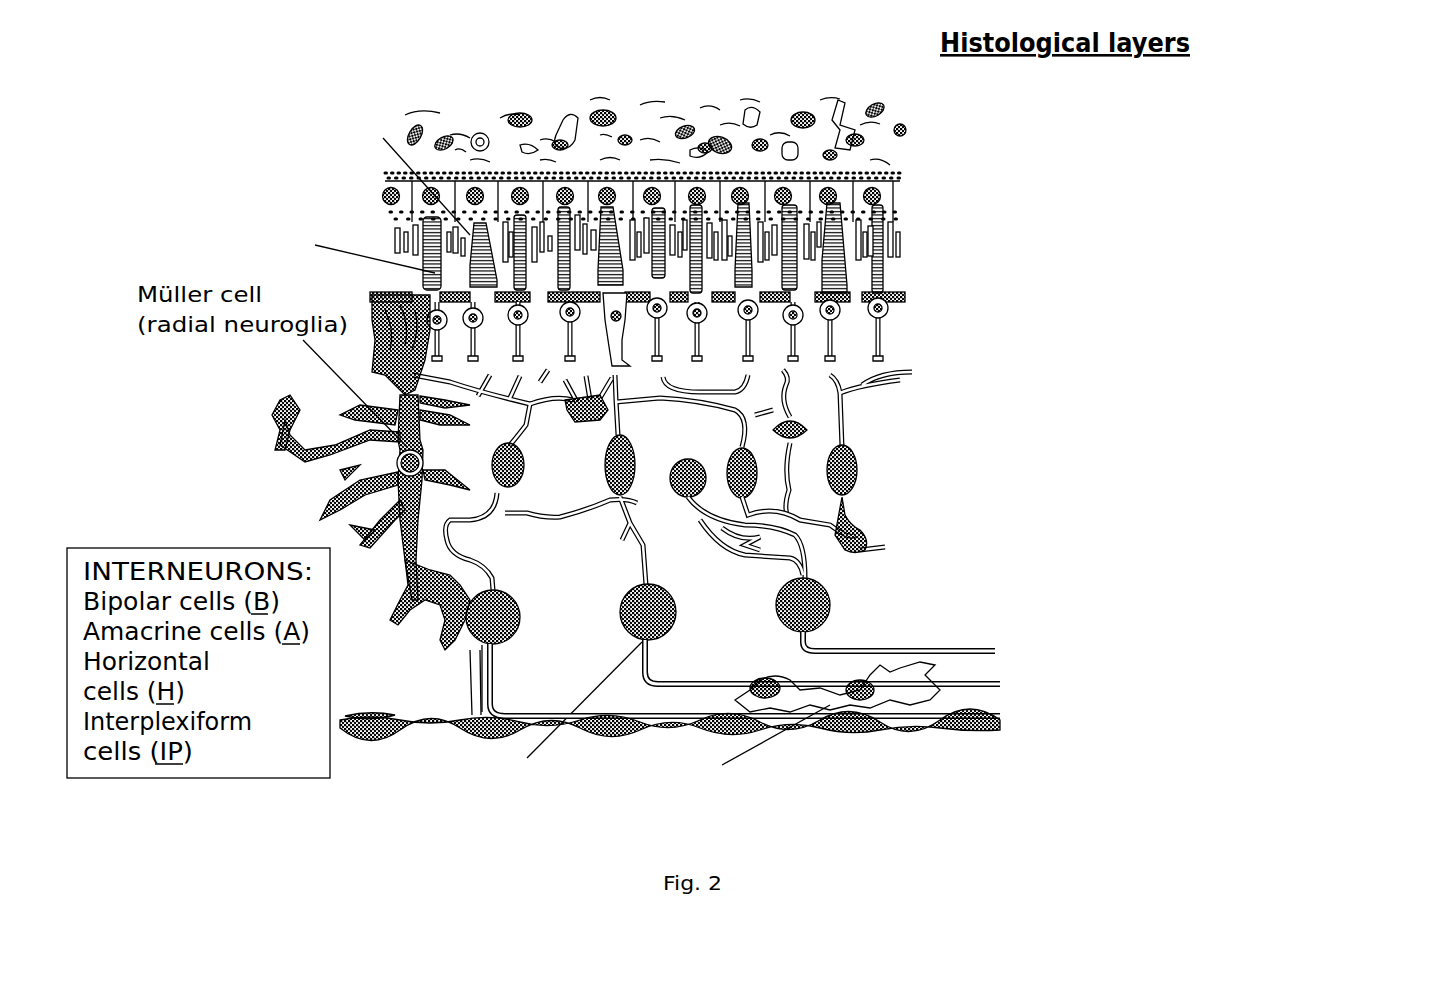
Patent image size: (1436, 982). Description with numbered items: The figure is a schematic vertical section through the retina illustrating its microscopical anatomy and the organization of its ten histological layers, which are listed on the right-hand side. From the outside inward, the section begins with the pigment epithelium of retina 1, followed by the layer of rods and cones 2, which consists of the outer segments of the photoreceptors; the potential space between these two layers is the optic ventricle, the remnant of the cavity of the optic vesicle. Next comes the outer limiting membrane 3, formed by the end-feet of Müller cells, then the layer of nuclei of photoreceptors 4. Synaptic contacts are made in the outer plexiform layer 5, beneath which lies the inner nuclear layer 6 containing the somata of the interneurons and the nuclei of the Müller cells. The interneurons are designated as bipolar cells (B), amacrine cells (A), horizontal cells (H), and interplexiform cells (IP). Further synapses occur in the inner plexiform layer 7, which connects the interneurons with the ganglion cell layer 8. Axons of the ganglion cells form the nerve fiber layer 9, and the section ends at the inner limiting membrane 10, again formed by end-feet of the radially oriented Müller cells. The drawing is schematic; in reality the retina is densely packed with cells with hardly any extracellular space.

The pigment epithelium of retina 1 is at (908, 186).
The layer of rods and cones 2 is at (910, 240).
The outer limiting membrane 3 is at (924, 287).
The layer of nuclei of photoreceptors 4 is at (926, 328).
The outer plexiform layer 5 is at (942, 388).
The inner nuclear layer 6 is at (910, 460).
The inner plexiform layer 7 is at (920, 533).
The ganglion cell layer 8 is at (895, 607).
The nerve fiber layer 9 is at (1030, 680).
The inner limiting membrane 10 is at (1030, 740).